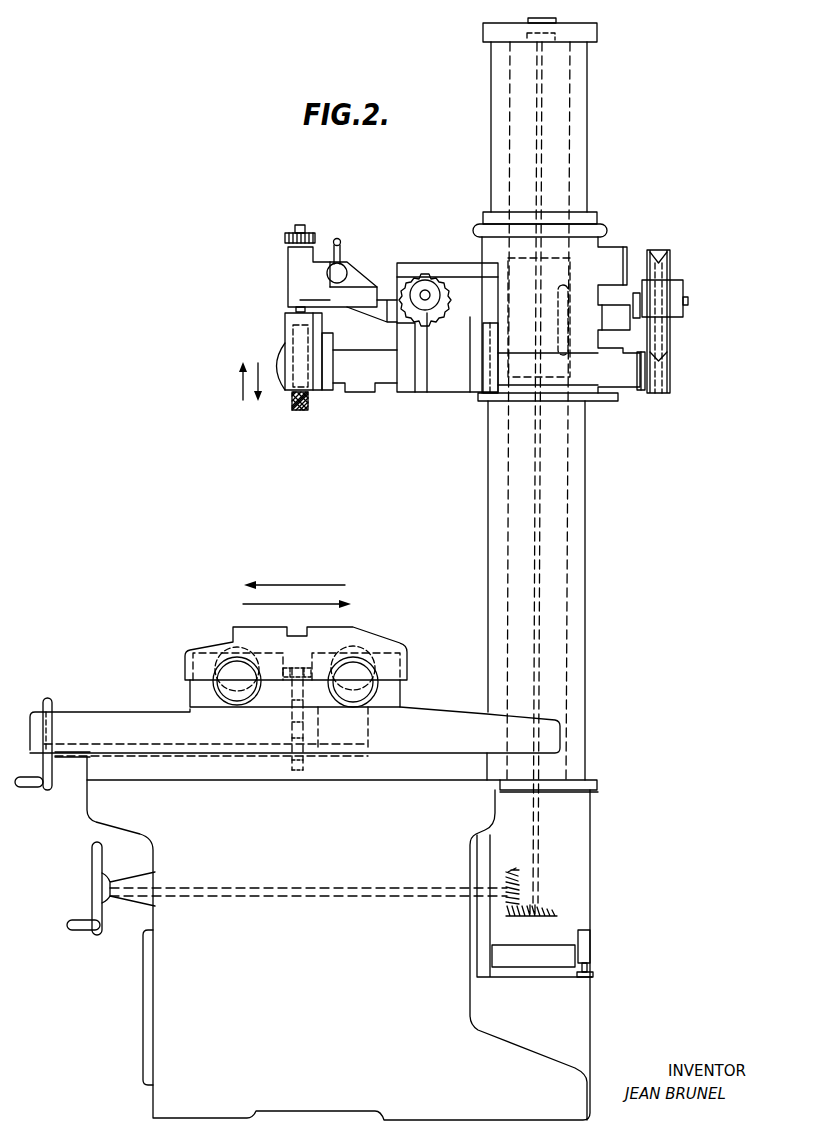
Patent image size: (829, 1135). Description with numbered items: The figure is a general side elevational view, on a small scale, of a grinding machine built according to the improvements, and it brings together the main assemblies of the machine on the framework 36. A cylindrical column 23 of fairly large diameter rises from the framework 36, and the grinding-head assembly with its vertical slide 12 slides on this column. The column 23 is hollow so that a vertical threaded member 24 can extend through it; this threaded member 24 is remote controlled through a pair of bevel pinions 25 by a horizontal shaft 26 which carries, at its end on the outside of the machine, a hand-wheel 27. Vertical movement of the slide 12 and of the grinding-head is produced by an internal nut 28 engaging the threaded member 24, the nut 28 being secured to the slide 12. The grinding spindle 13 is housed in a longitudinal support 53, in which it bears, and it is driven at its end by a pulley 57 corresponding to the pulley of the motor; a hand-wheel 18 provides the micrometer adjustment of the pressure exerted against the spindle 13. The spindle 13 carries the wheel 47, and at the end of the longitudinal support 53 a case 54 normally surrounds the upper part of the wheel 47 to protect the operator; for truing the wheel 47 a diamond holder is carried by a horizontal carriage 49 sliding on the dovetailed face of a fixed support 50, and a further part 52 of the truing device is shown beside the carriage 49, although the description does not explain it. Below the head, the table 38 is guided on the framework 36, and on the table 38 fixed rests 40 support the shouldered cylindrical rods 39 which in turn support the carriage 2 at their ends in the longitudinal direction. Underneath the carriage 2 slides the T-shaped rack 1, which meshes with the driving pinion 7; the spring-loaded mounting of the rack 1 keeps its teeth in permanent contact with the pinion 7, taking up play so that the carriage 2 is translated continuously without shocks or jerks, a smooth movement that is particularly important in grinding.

The rack 1 is at (315, 670).
The carriage 2 is at (345, 634).
The driving pinion 7 is at (287, 710).
The vertical slide 12 is at (577, 247).
The grinding-spindle 13 is at (600, 378).
The hand-wheel 18 is at (425, 293).
The cylindrical column 23 is at (497, 452).
The vertical threaded member 24 is at (540, 470).
The bevel pinions 25 is at (566, 910).
The horizontal shaft 26 is at (170, 892).
The hand-wheel 27 is at (95, 851).
The internal nut 28 is at (536, 293).
The framework 36 is at (170, 1008).
The table 38 is at (547, 738).
The cylindrical rods 39 is at (232, 692).
The fixed rests 40 is at (208, 660).
The wheel 47 is at (292, 406).
The horizontal carriage 49 is at (351, 281).
The fixed support 50 is at (366, 298).
The pin 52 is at (336, 238).
The longitudinal support 53 is at (368, 381).
The case 54 is at (285, 343).
The pulley 57 is at (658, 392).